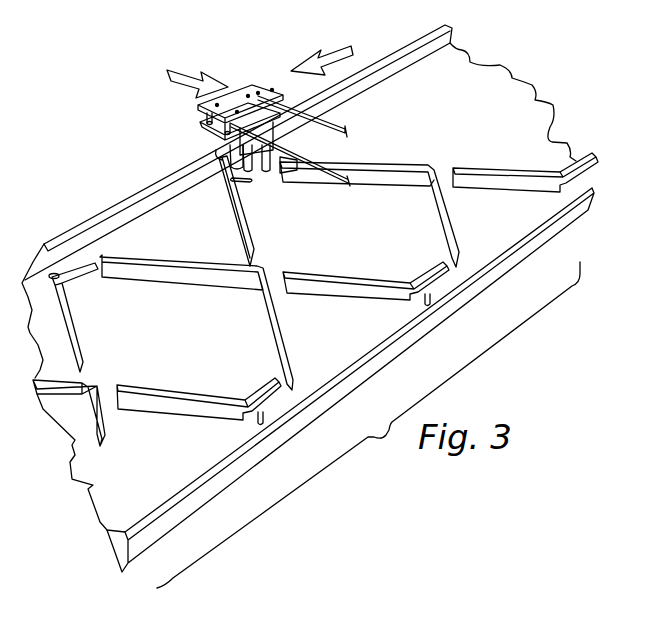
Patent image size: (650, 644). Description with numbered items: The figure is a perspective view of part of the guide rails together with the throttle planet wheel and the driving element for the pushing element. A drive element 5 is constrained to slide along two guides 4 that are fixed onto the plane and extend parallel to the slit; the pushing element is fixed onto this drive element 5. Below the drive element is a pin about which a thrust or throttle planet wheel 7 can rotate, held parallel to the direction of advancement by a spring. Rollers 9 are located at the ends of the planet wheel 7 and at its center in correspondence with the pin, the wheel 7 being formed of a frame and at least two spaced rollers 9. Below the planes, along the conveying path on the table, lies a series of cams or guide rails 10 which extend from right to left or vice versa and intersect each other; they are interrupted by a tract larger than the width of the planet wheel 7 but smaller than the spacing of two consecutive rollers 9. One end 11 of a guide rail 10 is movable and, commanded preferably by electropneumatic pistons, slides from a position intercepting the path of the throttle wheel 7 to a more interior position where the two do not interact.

The guides 4 is at (337, 124).
The drive element 5 is at (245, 95).
The throttle planet wheel 7 is at (237, 228).
The rollers 9 is at (230, 174).
The guide rails 10 is at (284, 347).
The movable end 11 is at (82, 284).